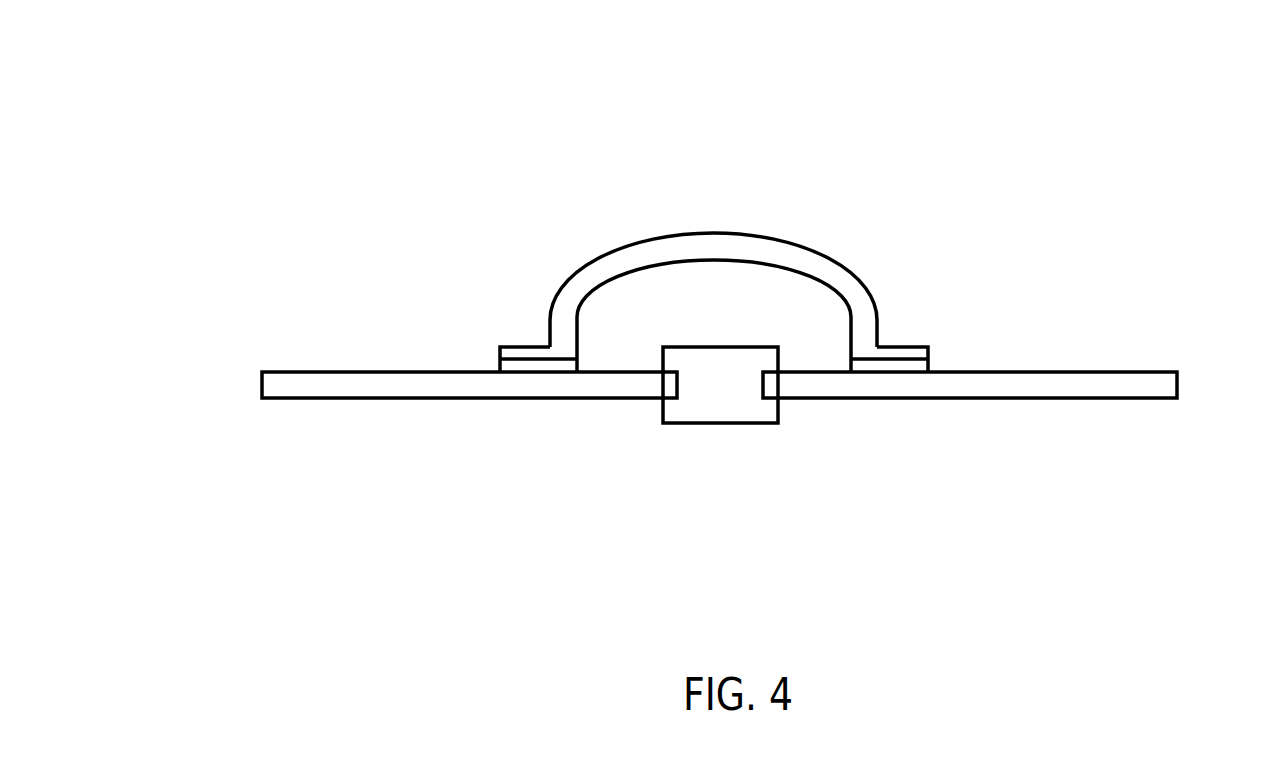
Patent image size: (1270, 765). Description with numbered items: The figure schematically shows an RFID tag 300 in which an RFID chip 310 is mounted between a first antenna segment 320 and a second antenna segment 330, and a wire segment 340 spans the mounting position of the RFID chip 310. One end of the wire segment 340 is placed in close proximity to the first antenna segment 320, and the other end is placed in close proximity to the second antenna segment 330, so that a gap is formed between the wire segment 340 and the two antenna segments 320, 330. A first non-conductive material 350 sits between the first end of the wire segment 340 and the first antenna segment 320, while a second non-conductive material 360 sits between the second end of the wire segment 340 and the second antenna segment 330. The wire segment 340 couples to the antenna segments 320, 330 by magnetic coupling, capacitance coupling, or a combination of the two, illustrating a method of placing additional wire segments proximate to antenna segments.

The RFID tag 300 is at (469, 132).
The RFID chip 310 is at (716, 398).
The first antenna segment 320 is at (282, 387).
The second antenna segment 330 is at (1152, 387).
The wire segment 340 is at (783, 258).
The first non-conductive material 350 is at (528, 366).
The second non-conductive material 360 is at (897, 367).